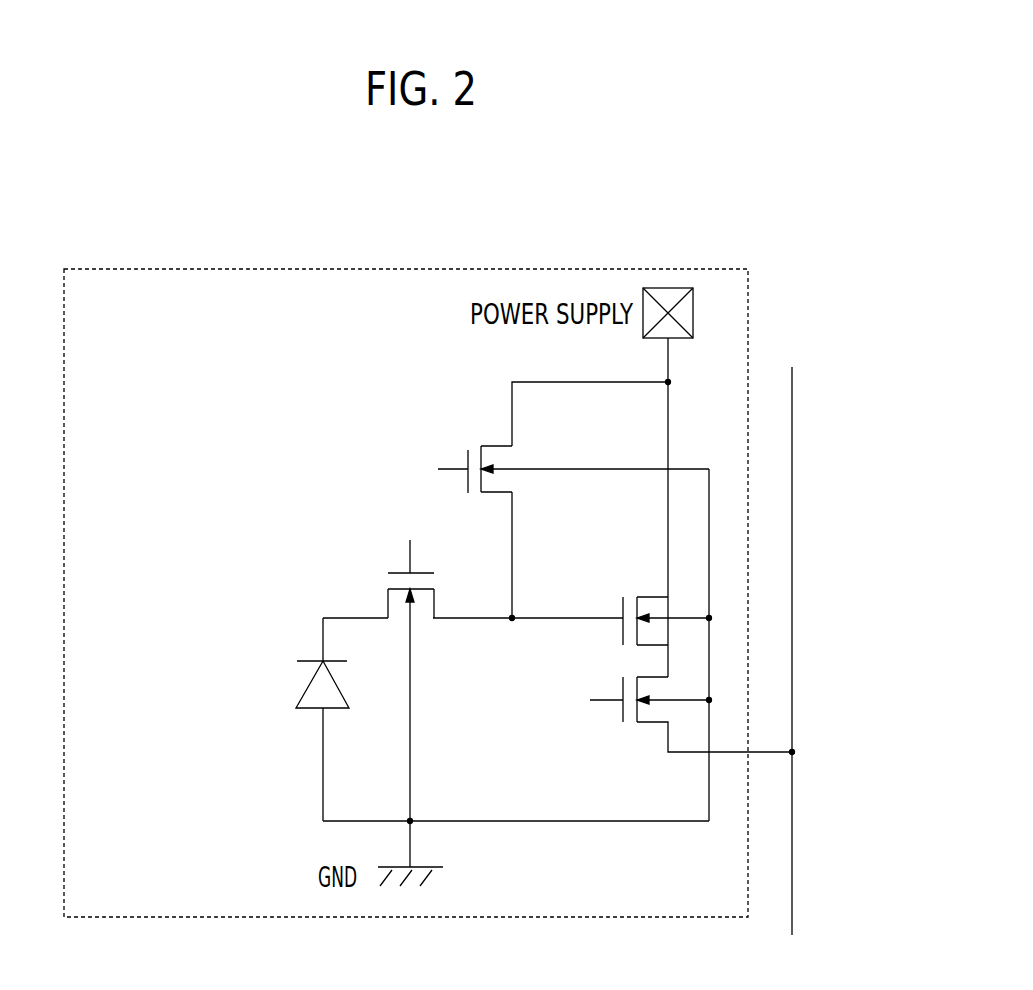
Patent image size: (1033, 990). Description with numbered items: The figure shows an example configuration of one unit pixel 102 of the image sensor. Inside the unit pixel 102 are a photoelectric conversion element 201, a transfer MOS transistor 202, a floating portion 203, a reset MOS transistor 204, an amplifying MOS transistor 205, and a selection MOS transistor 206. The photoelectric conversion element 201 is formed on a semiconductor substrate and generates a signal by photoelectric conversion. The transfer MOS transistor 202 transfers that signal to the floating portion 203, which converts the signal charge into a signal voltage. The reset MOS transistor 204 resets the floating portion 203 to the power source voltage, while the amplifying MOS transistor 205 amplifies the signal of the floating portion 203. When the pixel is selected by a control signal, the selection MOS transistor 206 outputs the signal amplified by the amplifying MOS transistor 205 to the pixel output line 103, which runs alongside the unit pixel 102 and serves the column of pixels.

The unit pixel 102 is at (372, 268).
The pixel output line 103 is at (792, 915).
The photoelectric conversion element 201 is at (307, 687).
The transfer MOS transistor 202 is at (390, 578).
The floating portion 203 is at (512, 622).
The reset MOS transistor 204 is at (475, 446).
The amplifying MOS transistor 205 is at (623, 596).
The selection MOS transistor 206 is at (630, 727).